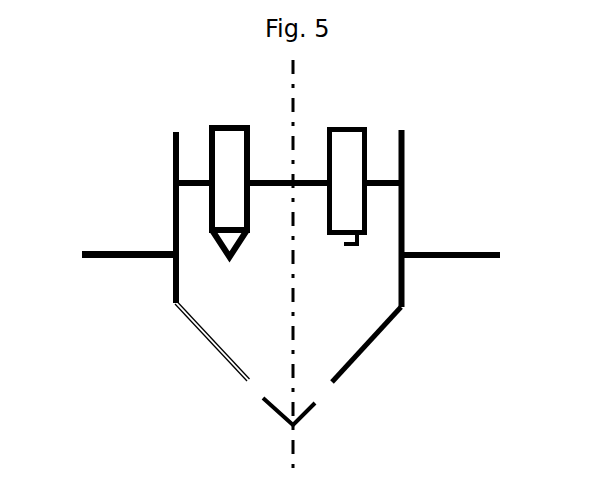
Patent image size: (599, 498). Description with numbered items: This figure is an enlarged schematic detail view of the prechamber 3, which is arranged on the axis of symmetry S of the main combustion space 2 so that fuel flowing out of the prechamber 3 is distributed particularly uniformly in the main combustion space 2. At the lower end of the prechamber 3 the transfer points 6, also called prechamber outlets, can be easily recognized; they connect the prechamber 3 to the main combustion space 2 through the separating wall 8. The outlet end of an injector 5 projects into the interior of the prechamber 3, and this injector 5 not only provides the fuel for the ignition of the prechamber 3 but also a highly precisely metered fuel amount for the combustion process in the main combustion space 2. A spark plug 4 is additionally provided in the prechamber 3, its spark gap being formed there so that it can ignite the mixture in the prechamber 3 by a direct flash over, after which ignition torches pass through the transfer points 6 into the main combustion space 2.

The main combustion space 2 is at (490, 329).
The prechamber 3 is at (414, 176).
The spark plug 4 is at (350, 148).
The injector 5 is at (228, 143).
The transfer points 6 is at (249, 390).
The separating wall 8 is at (380, 330).
The axis of symmetry S is at (297, 91).